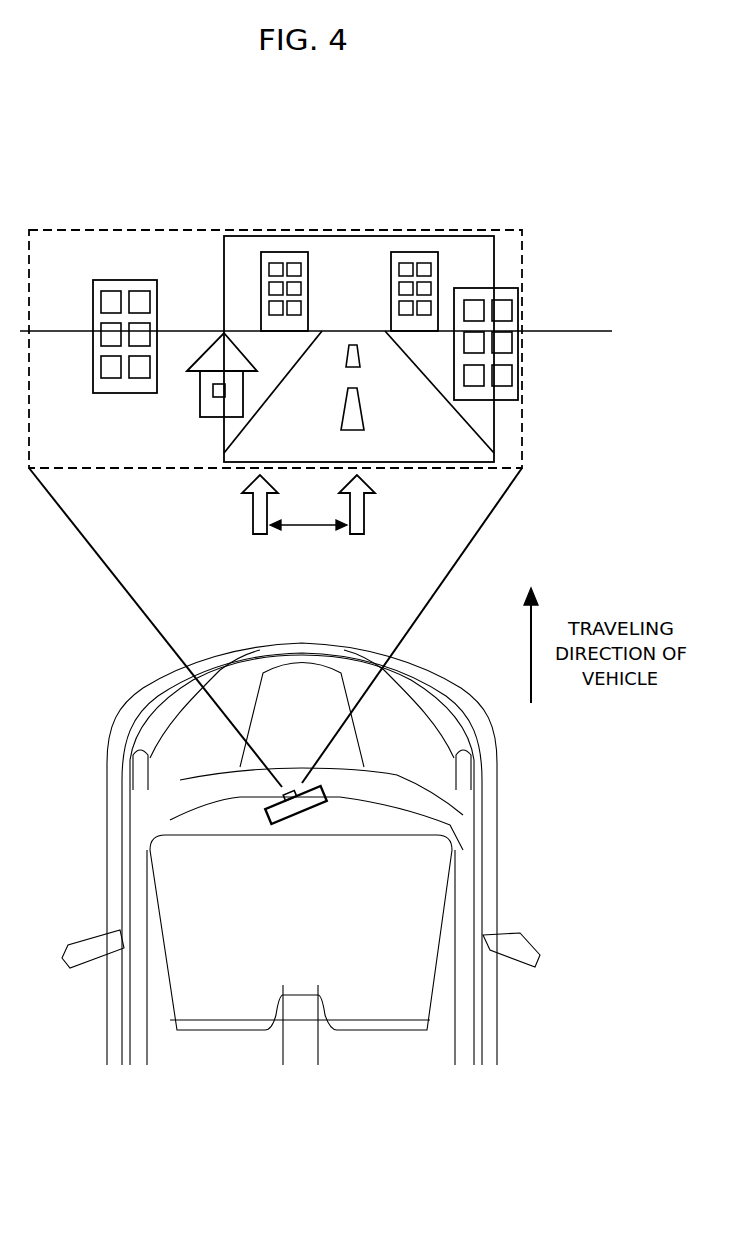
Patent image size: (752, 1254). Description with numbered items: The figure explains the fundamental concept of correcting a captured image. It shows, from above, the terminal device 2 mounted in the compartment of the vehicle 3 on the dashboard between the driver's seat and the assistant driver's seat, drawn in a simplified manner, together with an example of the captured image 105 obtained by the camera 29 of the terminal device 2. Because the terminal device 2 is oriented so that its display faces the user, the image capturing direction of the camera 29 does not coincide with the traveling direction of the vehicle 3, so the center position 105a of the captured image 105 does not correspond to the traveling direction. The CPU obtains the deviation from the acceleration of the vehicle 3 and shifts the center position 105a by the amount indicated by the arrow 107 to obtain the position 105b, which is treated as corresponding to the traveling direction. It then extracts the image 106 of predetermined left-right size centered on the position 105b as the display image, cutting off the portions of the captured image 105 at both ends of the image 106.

The captured image 105 is at (135, 230).
The image 106 is at (496, 260).
The arrow 107 is at (308, 514).
The center position 105a is at (255, 521).
The position 105b is at (363, 521).
The vehicle 3 is at (91, 690).
The camera 29 is at (287, 796).
The terminal device 2 is at (270, 811).